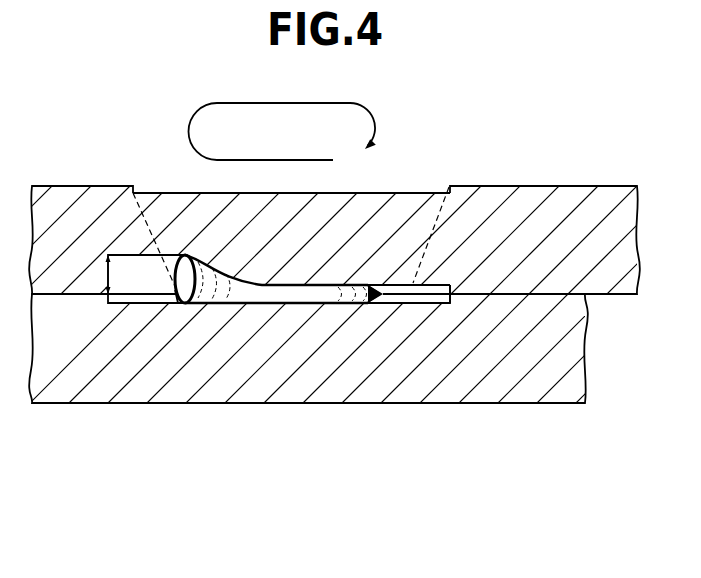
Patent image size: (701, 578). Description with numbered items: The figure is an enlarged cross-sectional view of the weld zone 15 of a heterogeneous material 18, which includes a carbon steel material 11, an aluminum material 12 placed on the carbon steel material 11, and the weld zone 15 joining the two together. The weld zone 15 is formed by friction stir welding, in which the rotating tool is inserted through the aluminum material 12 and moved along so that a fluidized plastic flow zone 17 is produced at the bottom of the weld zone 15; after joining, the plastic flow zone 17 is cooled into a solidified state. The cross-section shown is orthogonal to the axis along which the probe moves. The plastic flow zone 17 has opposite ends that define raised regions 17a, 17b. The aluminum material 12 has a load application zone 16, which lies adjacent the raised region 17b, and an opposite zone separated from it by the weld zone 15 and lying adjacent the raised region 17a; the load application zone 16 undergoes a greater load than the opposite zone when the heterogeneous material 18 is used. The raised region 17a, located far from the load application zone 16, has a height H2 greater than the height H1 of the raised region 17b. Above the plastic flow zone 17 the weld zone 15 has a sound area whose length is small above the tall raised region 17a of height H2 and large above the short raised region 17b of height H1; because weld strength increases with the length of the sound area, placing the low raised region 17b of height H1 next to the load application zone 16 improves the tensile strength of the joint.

The carbon steel material 11 is at (90, 405).
The aluminum material 12 is at (105, 199).
The weld zone 15 is at (401, 216).
The load application zone 16 is at (546, 218).
The plastic flow zone 17 is at (308, 296).
The raised region 17a is at (163, 297).
The raised region 17b is at (374, 296).
The heterogeneous material 18 is at (195, 448).
The height of raised region 17b H1 is at (448, 301).
The height of raised region 17a H2 is at (108, 298).